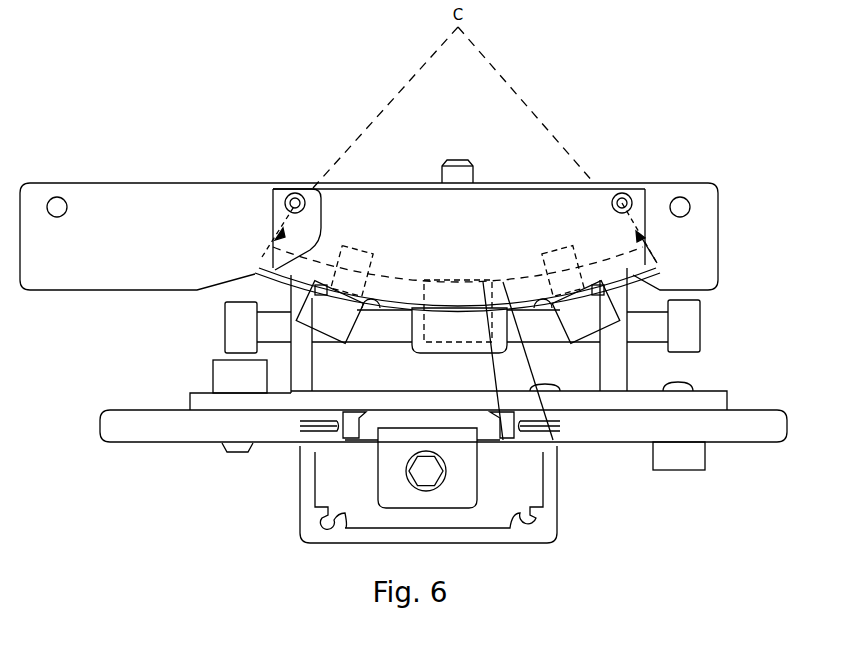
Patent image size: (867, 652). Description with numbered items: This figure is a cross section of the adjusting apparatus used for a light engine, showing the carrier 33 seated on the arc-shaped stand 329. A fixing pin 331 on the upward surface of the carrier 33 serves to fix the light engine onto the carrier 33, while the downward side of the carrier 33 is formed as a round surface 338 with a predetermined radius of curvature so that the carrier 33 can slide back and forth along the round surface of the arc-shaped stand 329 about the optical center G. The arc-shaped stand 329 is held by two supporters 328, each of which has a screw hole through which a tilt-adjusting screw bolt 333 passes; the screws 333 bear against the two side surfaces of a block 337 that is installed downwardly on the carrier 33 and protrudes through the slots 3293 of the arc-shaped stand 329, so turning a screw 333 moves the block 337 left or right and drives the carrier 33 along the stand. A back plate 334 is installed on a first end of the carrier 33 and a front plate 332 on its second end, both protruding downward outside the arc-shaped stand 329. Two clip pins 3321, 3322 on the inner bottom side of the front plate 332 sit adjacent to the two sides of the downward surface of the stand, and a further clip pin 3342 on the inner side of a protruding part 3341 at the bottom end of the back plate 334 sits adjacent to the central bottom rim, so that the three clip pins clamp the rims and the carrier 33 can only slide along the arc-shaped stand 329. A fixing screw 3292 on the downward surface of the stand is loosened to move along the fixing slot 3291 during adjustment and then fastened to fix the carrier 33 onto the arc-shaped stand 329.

The carrier 33 is at (408, 183).
The supporters 328 is at (607, 367).
The arc-shaped stand 329 is at (627, 265).
The fixing slots 3291 is at (262, 257).
The fixing screw 3292 is at (240, 446).
The slots 3293 is at (500, 295).
The fixing pin 331 is at (460, 170).
The front plate 332 is at (100, 193).
The clip pin 3321 is at (372, 315).
The clip pin 3322 is at (512, 303).
The tilt-adjusting screw bolts 333 is at (235, 338).
The back plate 334 is at (550, 197).
The protruding part 3341 is at (472, 348).
The clip pin 3342 is at (457, 307).
The block 337 is at (485, 300).
The round surface 338 is at (318, 200).